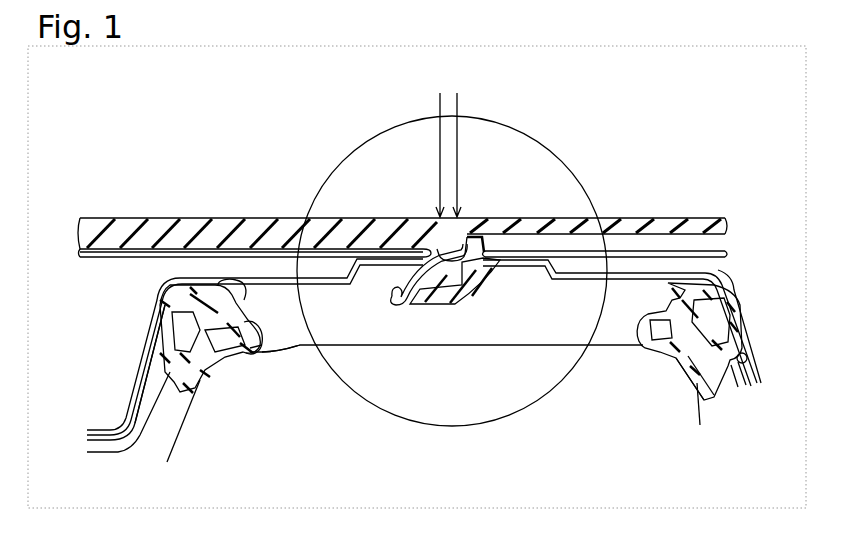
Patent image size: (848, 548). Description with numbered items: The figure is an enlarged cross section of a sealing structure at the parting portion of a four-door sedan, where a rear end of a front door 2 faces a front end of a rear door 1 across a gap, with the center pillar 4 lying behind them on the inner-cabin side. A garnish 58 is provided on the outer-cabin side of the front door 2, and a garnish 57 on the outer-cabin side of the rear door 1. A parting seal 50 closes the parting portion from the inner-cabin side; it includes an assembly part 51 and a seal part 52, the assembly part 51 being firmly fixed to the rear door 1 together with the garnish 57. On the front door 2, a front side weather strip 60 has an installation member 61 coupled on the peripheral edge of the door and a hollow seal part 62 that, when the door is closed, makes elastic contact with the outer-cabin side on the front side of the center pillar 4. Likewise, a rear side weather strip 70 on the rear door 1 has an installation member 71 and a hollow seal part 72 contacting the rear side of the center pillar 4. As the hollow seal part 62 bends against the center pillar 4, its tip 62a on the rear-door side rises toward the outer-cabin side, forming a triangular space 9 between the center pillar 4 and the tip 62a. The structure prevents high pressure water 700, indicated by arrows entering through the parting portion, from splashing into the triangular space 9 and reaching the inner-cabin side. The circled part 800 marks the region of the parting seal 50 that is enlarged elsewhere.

The rear door 1 is at (580, 285).
The front door 2 is at (305, 250).
The center pillar 4 is at (300, 347).
The triangular space 9 is at (265, 355).
The parting seal 50 is at (423, 248).
The assembly part 51 is at (481, 286).
The seal part 52 is at (406, 270).
The garnish 57 is at (622, 217).
The garnish 58 is at (183, 217).
The front side weather strip 60 is at (176, 405).
The installation member 61 is at (150, 340).
The hollow seal part 62 is at (238, 368).
The tip 62a is at (275, 355).
The rear side weather strip 70 is at (676, 336).
The installation member 71 is at (712, 287).
The hollow seal part 72 is at (678, 365).
The high pressure water 700 is at (450, 142).
The part 800 is at (556, 130).